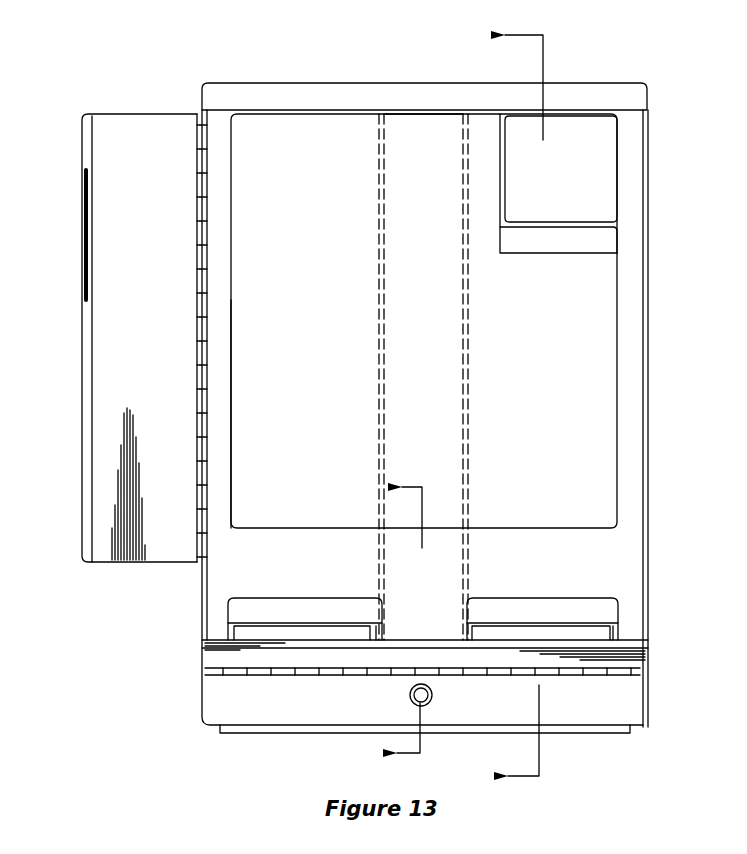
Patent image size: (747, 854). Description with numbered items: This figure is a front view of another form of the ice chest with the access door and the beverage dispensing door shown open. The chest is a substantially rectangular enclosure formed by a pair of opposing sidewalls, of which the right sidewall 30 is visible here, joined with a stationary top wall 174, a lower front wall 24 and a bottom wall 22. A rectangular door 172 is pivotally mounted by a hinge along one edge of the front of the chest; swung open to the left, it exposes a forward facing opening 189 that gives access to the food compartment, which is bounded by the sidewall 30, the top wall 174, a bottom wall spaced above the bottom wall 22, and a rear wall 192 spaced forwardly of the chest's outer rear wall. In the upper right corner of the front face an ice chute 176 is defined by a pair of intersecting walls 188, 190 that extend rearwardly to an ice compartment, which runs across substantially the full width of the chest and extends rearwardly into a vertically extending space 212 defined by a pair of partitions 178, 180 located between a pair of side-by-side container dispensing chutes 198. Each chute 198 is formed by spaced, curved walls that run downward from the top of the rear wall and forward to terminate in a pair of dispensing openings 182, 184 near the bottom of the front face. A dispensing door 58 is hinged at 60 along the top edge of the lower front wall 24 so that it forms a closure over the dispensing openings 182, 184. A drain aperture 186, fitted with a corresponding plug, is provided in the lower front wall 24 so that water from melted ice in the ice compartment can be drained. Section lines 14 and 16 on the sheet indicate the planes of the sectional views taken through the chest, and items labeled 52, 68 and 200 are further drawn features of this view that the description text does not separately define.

The section line 14- 14 is at (509, 408).
The section line 16- 16 is at (414, 621).
The bottom wall 22 is at (254, 733).
The lower front wall 24 is at (618, 700).
The sidewall 30 is at (648, 457).
The horizontal divider bar 52 is at (617, 636).
The dispensing door 58 is at (200, 643).
The hinge 60 is at (210, 676).
The rear wall panel 68 is at (354, 193).
The rectangular door 172 is at (131, 113).
The stationary top wall 174 is at (600, 82).
The ice chute 176 is at (582, 150).
The partition 178 is at (380, 274).
The partition 180 is at (470, 285).
The dispensing opening 182 is at (320, 612).
The dispensing opening 184 is at (545, 612).
The drain aperture 186 is at (432, 695).
The intersecting wall 188 is at (548, 222).
The forward facing opening 189 is at (600, 353).
The intersecting wall 190 is at (505, 155).
The rear wall 192 is at (305, 381).
The container dispensing chutes 198 is at (620, 603).
The left block rim 200 is at (228, 605).
The vertically extending space 212 is at (430, 237).